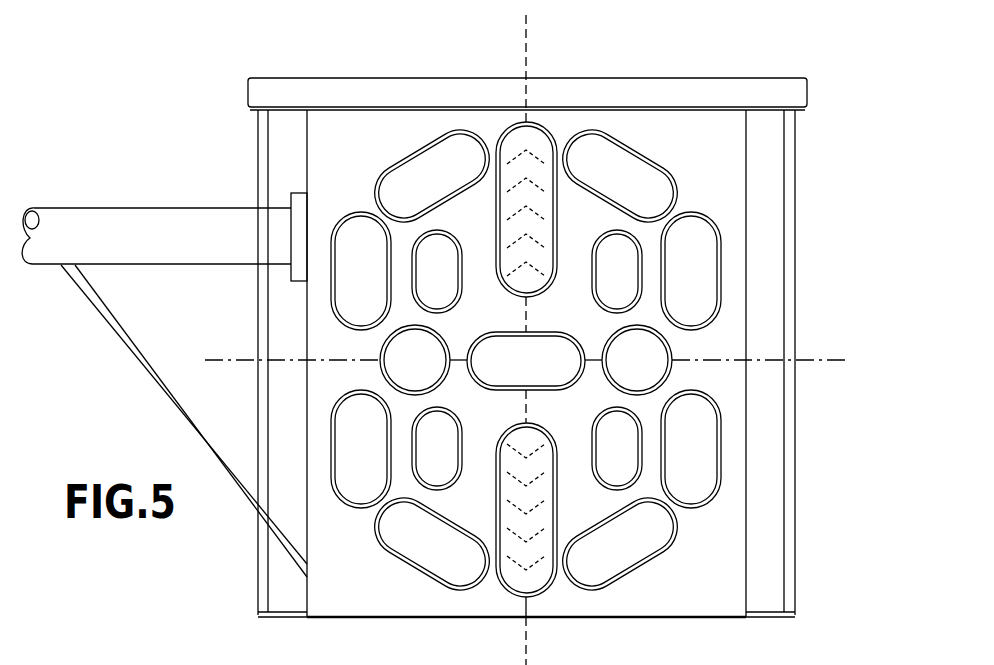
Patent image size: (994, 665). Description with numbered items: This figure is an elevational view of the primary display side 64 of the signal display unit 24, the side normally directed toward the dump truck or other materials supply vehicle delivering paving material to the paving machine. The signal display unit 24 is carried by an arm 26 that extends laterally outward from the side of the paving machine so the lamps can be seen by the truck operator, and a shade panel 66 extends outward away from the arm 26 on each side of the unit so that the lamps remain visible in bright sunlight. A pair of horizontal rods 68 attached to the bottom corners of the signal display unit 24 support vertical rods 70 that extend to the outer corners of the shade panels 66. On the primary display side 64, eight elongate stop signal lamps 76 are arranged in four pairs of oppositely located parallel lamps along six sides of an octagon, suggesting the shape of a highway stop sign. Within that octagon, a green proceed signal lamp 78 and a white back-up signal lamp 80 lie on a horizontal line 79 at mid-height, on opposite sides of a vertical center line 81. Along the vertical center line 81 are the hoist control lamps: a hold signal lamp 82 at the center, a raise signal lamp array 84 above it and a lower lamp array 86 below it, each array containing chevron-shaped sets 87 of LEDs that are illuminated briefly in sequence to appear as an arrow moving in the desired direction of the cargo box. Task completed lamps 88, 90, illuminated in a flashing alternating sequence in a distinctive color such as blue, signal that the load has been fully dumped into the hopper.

The signal display unit 24 is at (214, 126).
The arm 26 is at (143, 207).
The primary display side 64 is at (358, 604).
The shade panel 66 is at (661, 78).
The horizontal rod 68 is at (259, 617).
The vertical rod 70 is at (258, 400).
The stop signal lamp 76 is at (347, 283).
The green signal lamp 78 is at (623, 372).
The horizontal line 79 is at (226, 358).
The back-up signal lamp 80 is at (401, 372).
The vertical center line 81 is at (525, 48).
The hoist hold signal lamp 82 is at (512, 372).
The raise signal lamp array 84 is at (497, 262).
The lower lamp array 86 is at (558, 462).
The chevron-shaped set of LEDs 87 is at (534, 235).
The task completed lamp 88 is at (423, 285).
The task completed lamp 90 is at (603, 285).